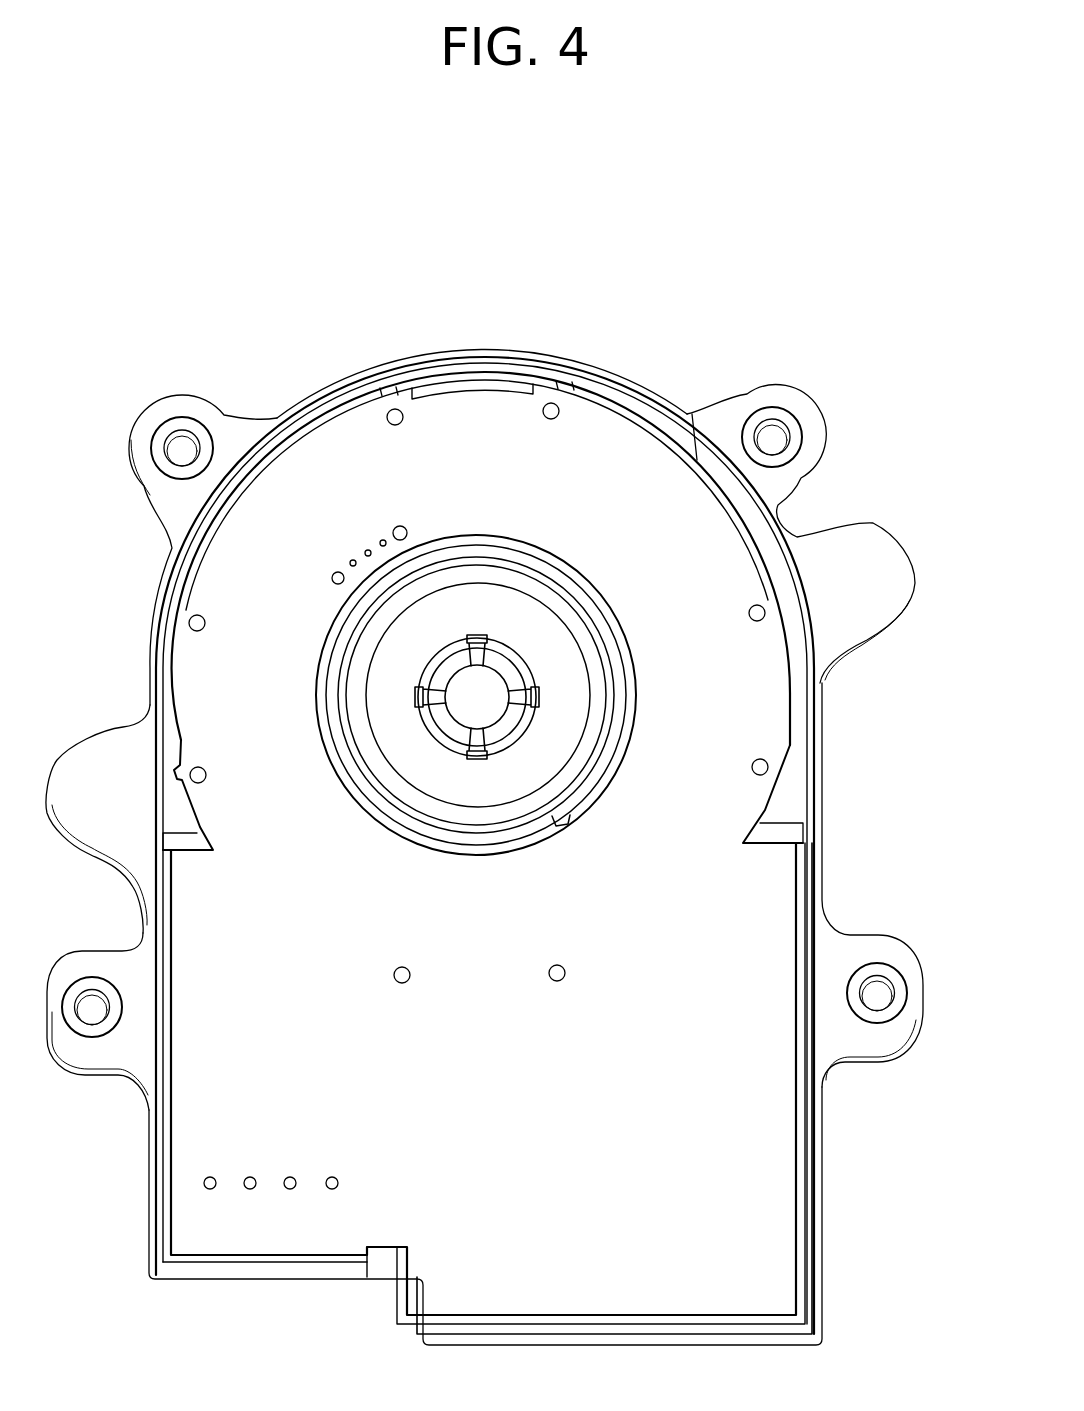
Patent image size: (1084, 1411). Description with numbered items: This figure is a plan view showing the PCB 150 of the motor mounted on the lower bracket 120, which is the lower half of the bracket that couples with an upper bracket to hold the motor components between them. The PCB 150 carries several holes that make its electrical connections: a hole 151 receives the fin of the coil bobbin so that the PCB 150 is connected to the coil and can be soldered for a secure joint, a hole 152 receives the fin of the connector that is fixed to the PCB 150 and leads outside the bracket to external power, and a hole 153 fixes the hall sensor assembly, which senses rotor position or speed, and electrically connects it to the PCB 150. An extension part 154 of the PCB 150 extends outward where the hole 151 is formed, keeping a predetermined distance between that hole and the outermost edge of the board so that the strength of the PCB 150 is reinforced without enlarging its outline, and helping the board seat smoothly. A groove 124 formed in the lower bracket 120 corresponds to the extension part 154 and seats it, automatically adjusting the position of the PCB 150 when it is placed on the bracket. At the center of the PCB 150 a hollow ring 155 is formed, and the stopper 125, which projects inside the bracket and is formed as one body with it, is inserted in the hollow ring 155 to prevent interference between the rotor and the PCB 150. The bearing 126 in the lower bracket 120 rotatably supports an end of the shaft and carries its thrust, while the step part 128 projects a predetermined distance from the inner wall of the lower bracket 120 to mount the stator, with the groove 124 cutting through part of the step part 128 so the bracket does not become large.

The lower bracket 120 is at (858, 558).
The groove 124 is at (388, 386).
The stopper 125 is at (595, 607).
The bearing 126 is at (515, 672).
The step part 128 is at (692, 414).
The PCB 150 is at (780, 1221).
The hole 151 is at (567, 398).
The hole 152 is at (338, 1178).
The hole 153 is at (406, 528).
The extension part 154 is at (552, 410).
The hollow ring 155 is at (565, 826).